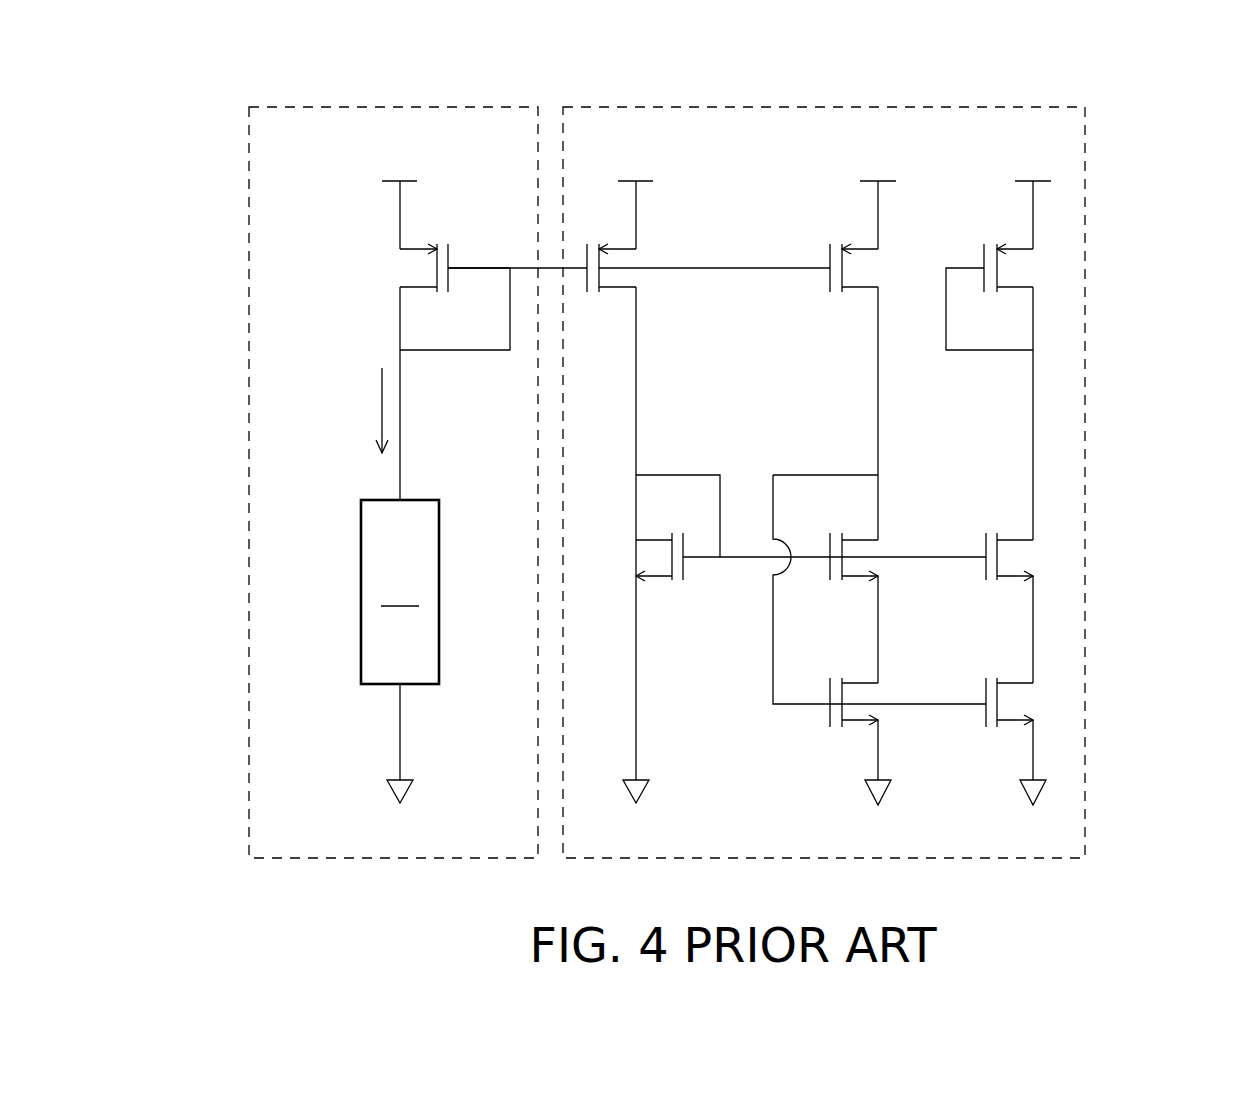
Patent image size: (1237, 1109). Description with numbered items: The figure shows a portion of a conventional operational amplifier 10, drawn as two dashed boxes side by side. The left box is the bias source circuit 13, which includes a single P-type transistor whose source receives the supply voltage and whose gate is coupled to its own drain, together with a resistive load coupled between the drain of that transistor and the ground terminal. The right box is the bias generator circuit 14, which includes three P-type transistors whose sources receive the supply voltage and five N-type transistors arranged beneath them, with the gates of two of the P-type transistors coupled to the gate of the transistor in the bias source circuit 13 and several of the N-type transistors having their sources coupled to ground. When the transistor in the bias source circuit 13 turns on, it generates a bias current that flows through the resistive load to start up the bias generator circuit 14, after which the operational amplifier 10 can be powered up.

The operational amplifier 10 is at (700, 472).
The bias source circuit 13 is at (248, 440).
The bias generator circuit 14 is at (1085, 437).